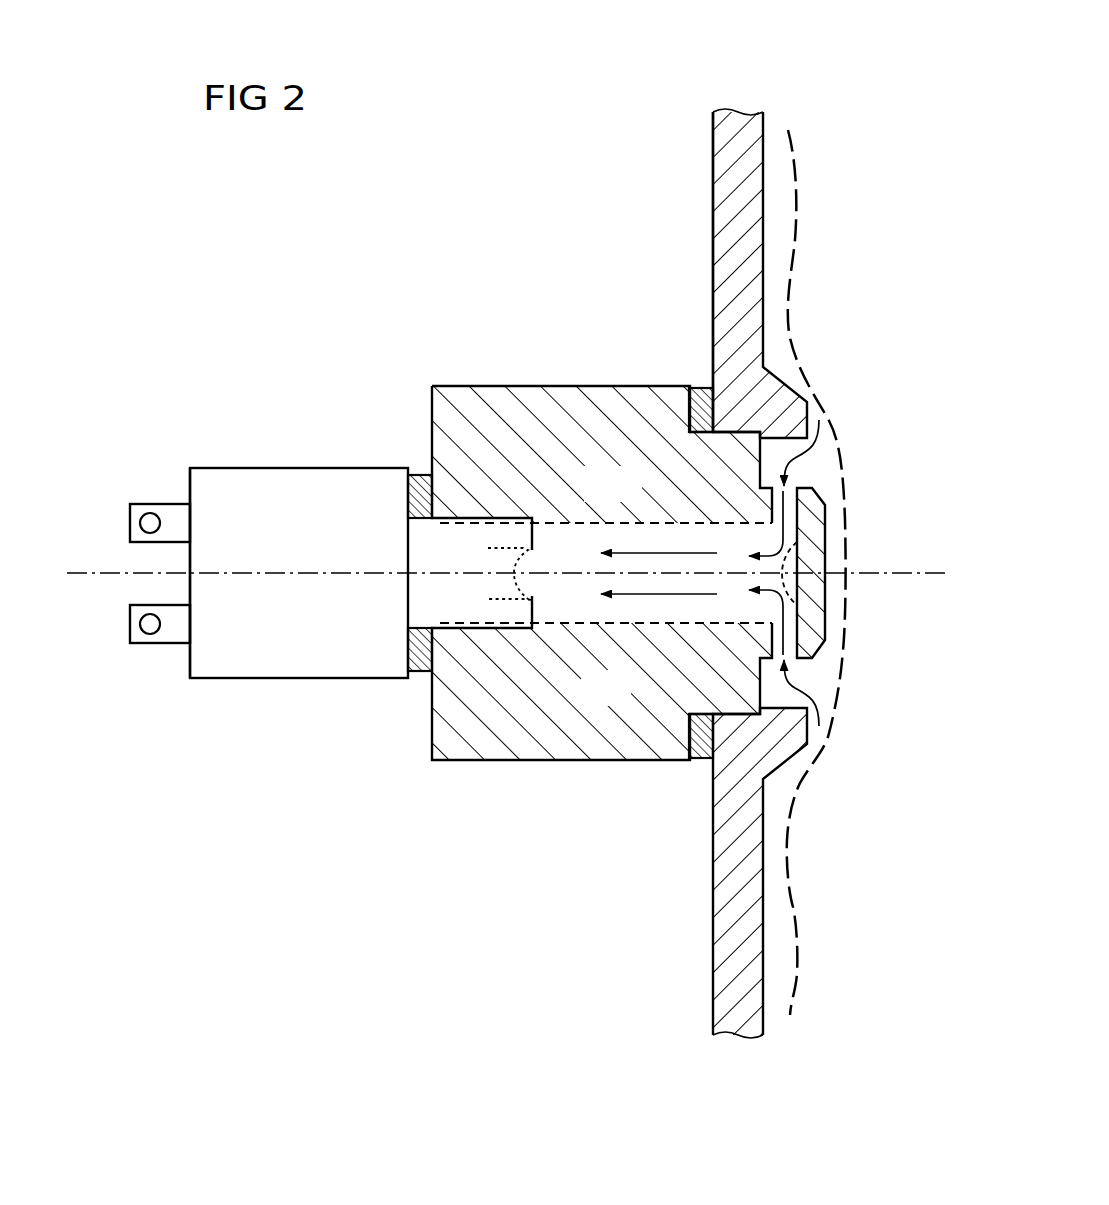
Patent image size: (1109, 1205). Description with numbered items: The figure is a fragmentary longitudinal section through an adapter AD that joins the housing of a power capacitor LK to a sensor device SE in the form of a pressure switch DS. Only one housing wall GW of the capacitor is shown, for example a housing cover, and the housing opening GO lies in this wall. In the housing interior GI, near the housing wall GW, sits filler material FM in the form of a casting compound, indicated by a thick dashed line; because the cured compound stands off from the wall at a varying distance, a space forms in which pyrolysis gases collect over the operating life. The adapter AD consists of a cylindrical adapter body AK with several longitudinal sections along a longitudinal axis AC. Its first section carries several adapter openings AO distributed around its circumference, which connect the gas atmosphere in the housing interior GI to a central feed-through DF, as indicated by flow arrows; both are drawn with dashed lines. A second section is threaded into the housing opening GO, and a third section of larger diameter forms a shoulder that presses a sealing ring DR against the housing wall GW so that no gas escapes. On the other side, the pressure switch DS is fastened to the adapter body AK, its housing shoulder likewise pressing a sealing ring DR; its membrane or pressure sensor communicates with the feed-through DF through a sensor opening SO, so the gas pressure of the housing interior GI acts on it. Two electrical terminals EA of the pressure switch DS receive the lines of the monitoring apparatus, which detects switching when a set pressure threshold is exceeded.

The power capacitor LK is at (727, 97).
The housing interior GI is at (881, 156).
The housing wall GW is at (712, 170).
The adapter AD is at (518, 360).
The sealing ring DR is at (700, 386).
The sensor device SE is at (180, 459).
The pressure switch DS is at (297, 466).
The sensor opening SO is at (536, 557).
The housing opening GO is at (852, 493).
The longitudinal axis AC is at (933, 572).
The electrical terminals EA is at (130, 513).
The central feed-through DF is at (613, 625).
The adapter openings AO is at (793, 662).
The adapter body AK is at (497, 764).
The filler material FM is at (876, 848).